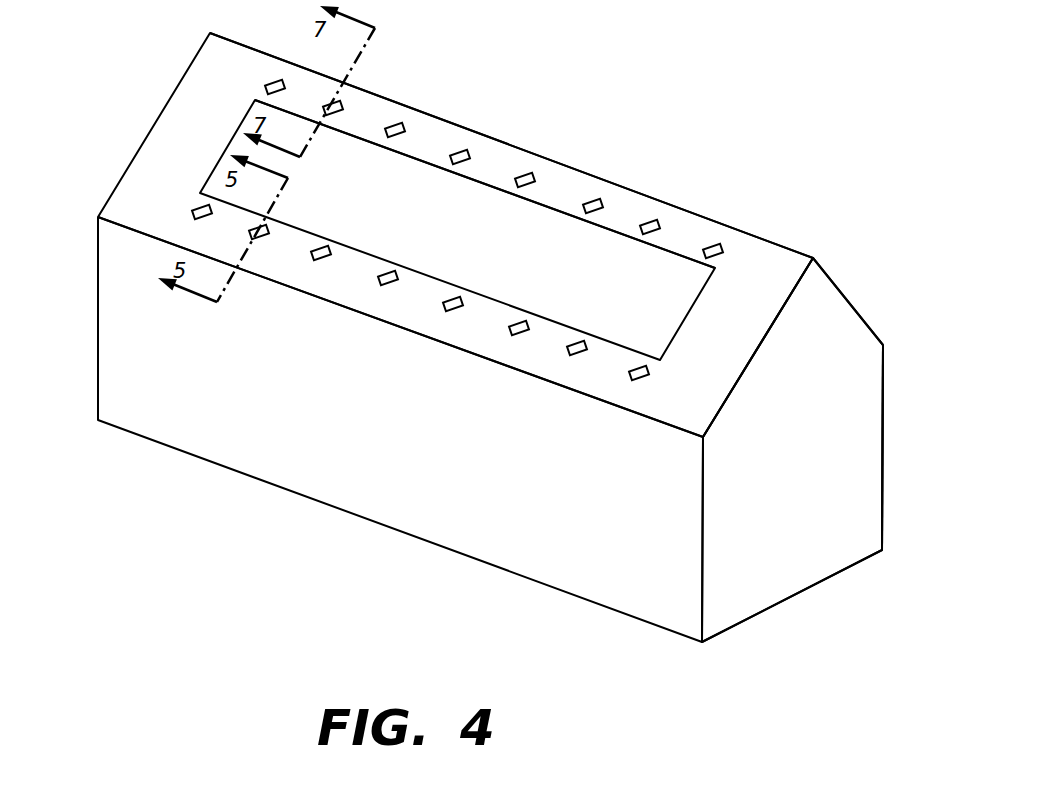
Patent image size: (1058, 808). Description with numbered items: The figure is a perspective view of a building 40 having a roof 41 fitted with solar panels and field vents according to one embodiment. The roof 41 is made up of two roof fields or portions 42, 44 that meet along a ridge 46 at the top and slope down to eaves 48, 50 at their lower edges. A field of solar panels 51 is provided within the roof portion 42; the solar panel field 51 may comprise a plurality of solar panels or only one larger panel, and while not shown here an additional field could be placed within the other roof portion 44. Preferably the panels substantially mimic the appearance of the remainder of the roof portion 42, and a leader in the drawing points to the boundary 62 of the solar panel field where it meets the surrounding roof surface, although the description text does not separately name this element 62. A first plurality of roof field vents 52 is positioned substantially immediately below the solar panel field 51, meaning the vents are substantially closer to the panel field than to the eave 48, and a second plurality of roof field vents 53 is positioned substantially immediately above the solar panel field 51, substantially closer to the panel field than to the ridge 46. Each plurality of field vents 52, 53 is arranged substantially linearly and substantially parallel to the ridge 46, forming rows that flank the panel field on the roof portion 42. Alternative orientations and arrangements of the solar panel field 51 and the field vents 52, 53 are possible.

The building 40 is at (128, 77).
The roof 41 is at (858, 249).
The roof portion 42 is at (678, 400).
The roof portion 44 is at (855, 305).
The ridge 46 is at (633, 190).
The eave 48 is at (602, 402).
The eave 50 is at (883, 346).
The solar panel field 51 is at (449, 227).
The roof field vents 52 is at (512, 334).
The roof field vents 53 is at (595, 200).
The recess wall 62 is at (670, 245).